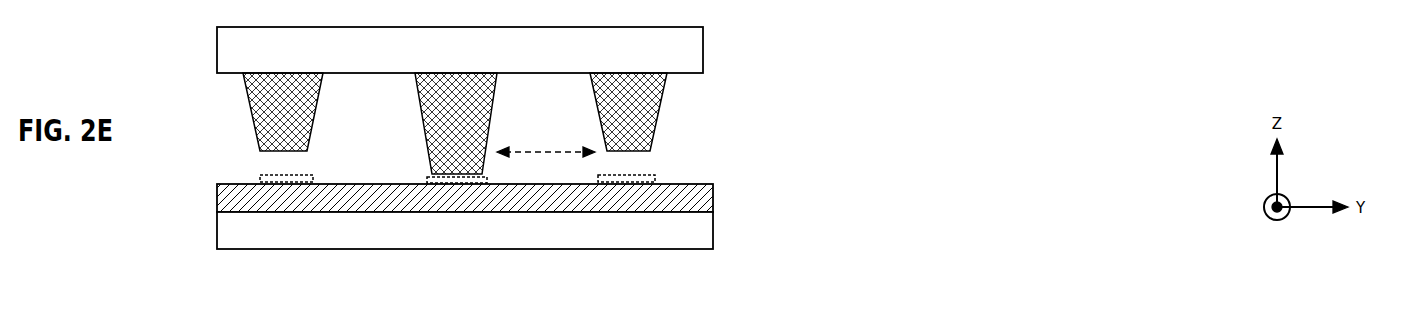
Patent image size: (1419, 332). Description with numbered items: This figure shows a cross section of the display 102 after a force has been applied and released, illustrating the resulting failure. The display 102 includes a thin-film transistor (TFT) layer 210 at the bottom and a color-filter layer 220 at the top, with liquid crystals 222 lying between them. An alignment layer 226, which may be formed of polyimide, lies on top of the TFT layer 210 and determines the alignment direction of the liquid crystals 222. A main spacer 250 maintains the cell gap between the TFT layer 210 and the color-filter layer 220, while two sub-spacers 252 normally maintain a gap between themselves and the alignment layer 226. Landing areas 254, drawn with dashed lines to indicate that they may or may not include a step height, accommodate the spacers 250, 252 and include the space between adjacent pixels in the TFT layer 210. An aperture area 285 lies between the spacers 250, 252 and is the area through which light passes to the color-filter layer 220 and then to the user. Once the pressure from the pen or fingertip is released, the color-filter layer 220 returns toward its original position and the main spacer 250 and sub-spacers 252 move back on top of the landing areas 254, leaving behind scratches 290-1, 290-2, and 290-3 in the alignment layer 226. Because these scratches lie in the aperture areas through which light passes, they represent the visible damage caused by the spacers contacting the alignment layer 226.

The color-filter layer 220 is at (703, 50).
The sub-spacers 252 is at (455, 112).
The main spacer 250 is at (456, 123).
The liquid crystals 222 is at (461, 107).
The alignment layer 226 is at (714, 197).
The thin-film transistor (TFT) layer 210 is at (714, 232).
The landing areas 254 is at (266, 181).
The aperture area 285 is at (560, 152).
The scratch 290-1 is at (358, 187).
The scratch 290-2 is at (684, 179).
The scratch 290-3 is at (521, 184).
The display 102 is at (1250, 47).